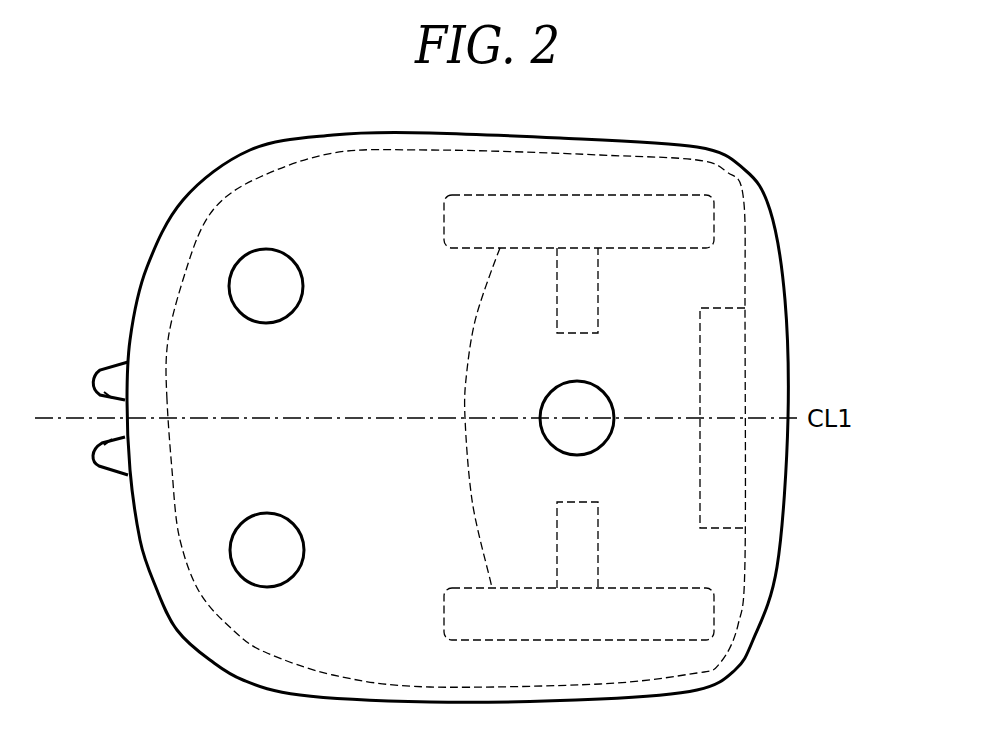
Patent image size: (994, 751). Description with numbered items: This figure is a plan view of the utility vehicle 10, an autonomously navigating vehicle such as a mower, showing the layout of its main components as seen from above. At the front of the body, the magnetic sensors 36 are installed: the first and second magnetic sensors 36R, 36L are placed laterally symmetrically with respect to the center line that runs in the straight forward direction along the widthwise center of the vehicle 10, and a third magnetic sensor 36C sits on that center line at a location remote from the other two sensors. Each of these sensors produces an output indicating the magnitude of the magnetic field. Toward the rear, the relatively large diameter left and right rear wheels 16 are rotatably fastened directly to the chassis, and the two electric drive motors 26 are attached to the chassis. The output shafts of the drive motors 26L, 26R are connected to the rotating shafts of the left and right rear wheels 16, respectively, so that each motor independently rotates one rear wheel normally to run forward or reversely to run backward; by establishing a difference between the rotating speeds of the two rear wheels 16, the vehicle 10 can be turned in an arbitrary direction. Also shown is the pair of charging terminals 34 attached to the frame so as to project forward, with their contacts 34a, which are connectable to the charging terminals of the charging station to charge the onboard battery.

The utility vehicle 10 is at (716, 133).
The rear wheels 16 is at (476, 418).
The drive motors 26 is at (866, 262).
The right drive motor 26R is at (598, 277).
The left drive motor 26L is at (598, 528).
The charging terminals 34 is at (97, 384).
The contacts 34a is at (108, 396).
The magnetic sensors 36 is at (240, 352).
The first magnetic sensor 36R is at (265, 324).
The second magnetic sensor 36L is at (266, 512).
The third magnetic sensor 36C is at (607, 398).